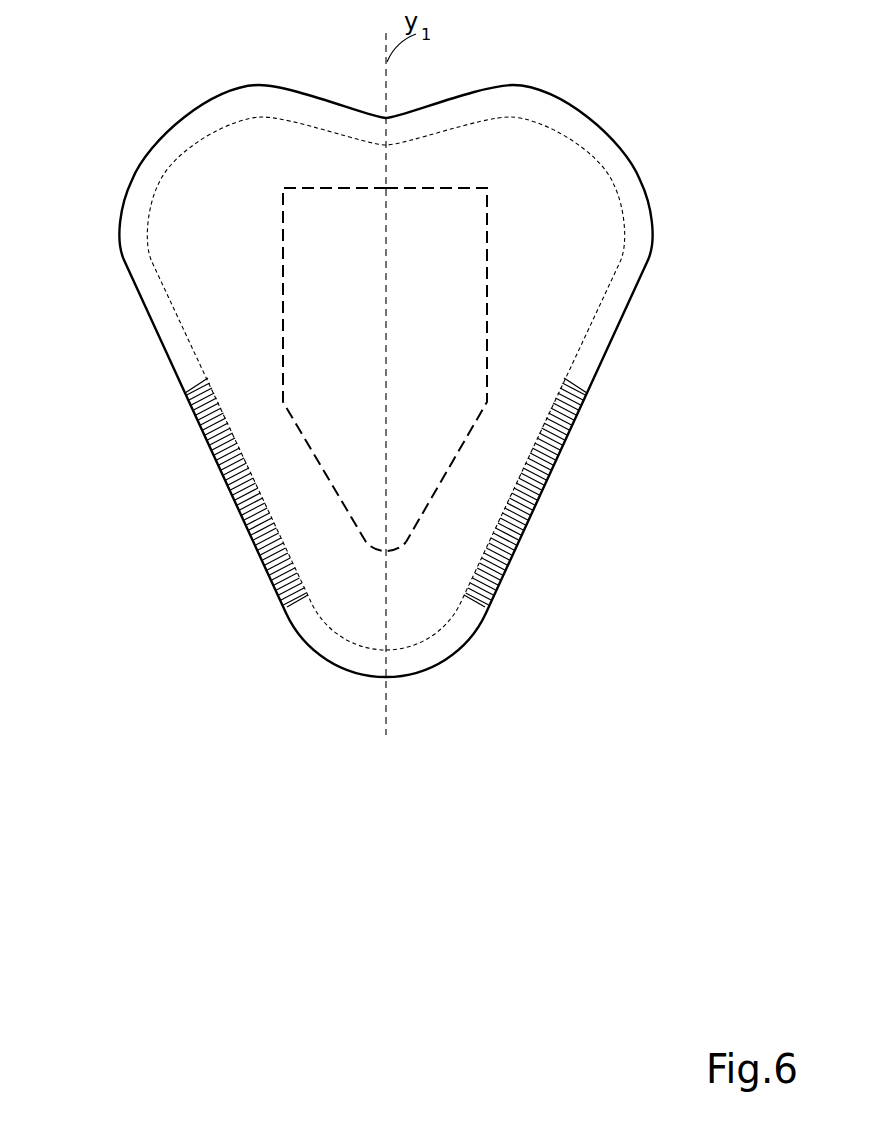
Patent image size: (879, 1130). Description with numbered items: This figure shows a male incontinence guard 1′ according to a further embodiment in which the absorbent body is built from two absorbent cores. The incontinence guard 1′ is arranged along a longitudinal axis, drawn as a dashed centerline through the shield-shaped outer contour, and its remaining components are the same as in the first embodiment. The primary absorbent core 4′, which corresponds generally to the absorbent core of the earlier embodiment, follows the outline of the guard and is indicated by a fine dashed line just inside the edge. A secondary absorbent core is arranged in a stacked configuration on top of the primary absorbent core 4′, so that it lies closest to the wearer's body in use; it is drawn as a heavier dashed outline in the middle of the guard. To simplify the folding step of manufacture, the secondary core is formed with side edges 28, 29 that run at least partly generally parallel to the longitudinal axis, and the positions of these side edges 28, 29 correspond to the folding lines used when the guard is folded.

The male incontinence guard 1′ is at (616, 86).
The primary absorbent core 4′ is at (585, 186).
The side edge 28 is at (283, 315).
The side edge 29 is at (487, 299).